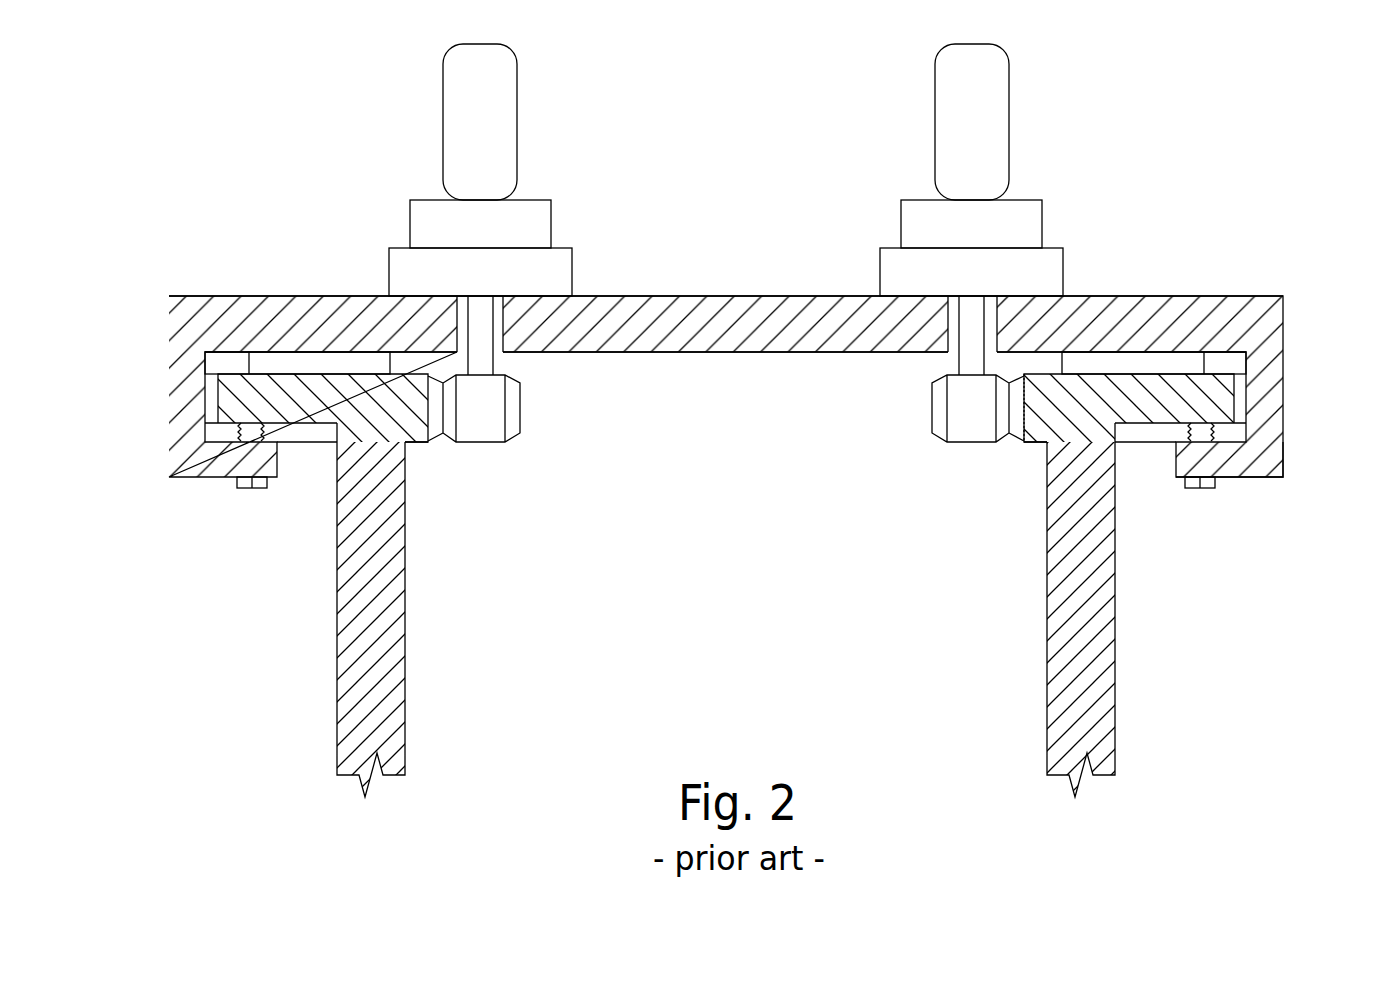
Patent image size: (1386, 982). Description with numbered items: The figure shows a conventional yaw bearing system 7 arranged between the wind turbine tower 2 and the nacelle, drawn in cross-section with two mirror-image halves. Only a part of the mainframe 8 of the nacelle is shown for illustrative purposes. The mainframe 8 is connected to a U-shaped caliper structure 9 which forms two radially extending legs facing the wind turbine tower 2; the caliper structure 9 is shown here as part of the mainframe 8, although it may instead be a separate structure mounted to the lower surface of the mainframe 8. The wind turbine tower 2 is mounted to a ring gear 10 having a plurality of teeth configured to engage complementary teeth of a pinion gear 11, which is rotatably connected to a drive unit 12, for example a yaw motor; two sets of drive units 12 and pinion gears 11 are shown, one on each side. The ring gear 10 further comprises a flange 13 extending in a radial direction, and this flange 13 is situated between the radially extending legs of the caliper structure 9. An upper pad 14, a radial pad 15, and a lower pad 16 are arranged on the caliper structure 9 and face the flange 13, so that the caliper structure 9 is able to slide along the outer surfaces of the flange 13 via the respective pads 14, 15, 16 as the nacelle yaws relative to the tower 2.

The wind turbine tower 2 is at (390, 638).
The yaw bearing system 7 is at (1234, 505).
The mainframe 8 is at (715, 310).
The caliper structure 9 is at (1262, 337).
The ring gear 10 is at (419, 454).
The pinion gear 11 is at (492, 414).
The drive unit 12 is at (417, 223).
The flange 13 is at (308, 432).
The upper pad 14 is at (288, 367).
The radial pad 15 is at (212, 390).
The lower pad 16 is at (250, 430).